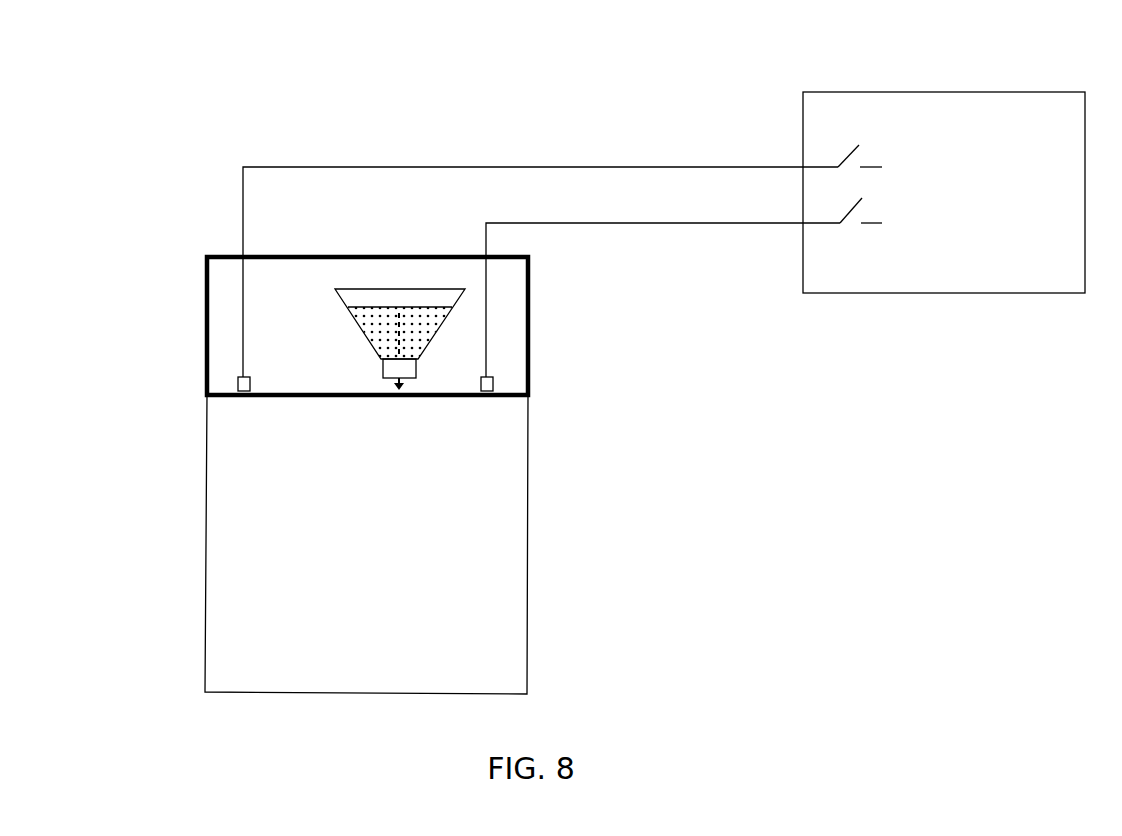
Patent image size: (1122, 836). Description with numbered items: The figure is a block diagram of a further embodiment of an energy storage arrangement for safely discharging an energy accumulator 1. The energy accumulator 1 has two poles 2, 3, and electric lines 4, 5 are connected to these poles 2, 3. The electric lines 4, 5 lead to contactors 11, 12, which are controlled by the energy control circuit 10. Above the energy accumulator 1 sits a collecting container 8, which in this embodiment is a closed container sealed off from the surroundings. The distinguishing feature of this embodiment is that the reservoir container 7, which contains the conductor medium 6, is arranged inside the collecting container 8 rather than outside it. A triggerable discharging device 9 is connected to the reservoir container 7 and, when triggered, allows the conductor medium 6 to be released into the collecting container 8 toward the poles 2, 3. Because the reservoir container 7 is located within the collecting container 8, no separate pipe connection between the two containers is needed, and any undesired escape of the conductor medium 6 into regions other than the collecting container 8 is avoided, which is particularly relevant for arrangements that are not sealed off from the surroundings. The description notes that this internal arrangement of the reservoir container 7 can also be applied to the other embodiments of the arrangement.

The energy accumulator 1 is at (496, 540).
The pole 2 is at (240, 387).
The pole 3 is at (493, 383).
The electric line 4 is at (540, 254).
The electric line 5 is at (663, 300).
The conductor medium 6 is at (420, 332).
The reservoir container 7 is at (370, 289).
The collecting container 8 is at (205, 353).
The triggerable discharging device 9 is at (400, 371).
The energy control circuit 10 is at (978, 120).
The contactor 11 is at (848, 137).
The contactor 12 is at (851, 234).